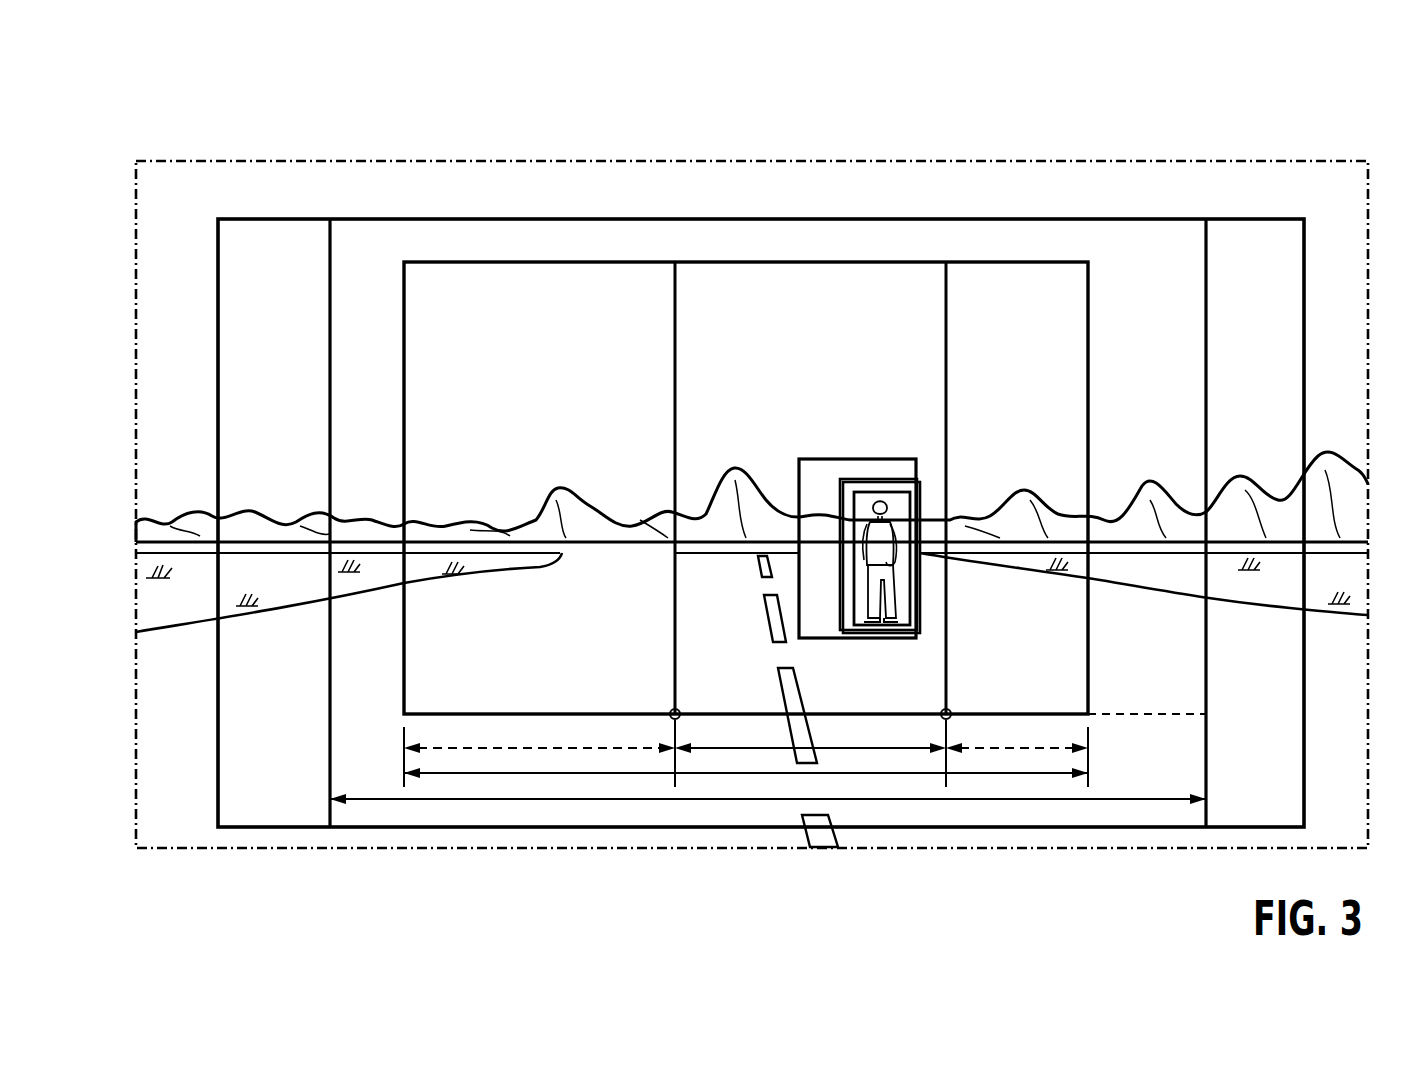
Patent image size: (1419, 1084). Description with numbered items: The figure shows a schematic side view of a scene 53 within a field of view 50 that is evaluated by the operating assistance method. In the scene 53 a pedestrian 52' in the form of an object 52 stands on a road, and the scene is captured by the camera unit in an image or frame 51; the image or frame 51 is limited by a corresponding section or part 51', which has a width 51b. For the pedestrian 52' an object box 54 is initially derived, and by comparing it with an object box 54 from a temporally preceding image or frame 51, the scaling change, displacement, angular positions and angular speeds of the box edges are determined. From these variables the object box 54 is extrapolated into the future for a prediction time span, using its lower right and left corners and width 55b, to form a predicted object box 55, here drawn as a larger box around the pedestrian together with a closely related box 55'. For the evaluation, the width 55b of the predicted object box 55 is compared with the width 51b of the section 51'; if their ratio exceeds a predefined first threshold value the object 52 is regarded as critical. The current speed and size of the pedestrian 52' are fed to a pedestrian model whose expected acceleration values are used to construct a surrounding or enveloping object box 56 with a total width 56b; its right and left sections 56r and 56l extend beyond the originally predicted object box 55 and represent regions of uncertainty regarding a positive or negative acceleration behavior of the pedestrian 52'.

The field of view 50 is at (1206, 161).
The scene 53 is at (1278, 182).
The image or frame 51 is at (761, 464).
The section or part of the image 51' is at (724, 523).
The width of section 51b is at (562, 827).
The predicted object box 55 is at (805, 409).
The enveloping object box 56 is at (1027, 262).
The left section of enveloping object box 56l is at (492, 748).
The right section of enveloping object box 56r is at (1017, 748).
The width of second image region 56b is at (586, 773).
The width of predicted object box 55b is at (730, 748).
The detection window 55' is at (848, 484).
The object 52 is at (951, 480).
The pedestrian 52' is at (881, 557).
The object box 54 is at (900, 492).